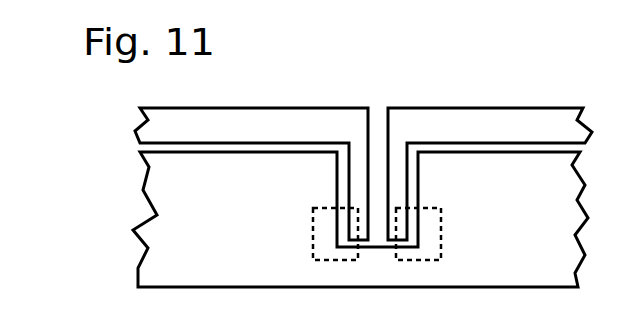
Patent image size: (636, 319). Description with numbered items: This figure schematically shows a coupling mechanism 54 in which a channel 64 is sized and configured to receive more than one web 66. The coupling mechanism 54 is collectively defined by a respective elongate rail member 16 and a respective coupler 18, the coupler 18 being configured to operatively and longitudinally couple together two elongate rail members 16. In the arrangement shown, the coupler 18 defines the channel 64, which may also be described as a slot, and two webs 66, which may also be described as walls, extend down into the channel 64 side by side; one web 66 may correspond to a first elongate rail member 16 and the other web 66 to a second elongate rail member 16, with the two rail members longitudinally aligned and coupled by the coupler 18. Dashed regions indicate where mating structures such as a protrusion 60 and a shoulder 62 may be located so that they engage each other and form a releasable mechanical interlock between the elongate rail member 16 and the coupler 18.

The coupling mechanism 54 is at (514, 60).
The elongate rail member 16 is at (219, 100).
The coupler 18 is at (311, 100).
The web 66 is at (370, 172).
The channel 64 is at (413, 162).
The protrusion 60 is at (313, 222).
The shoulder 62 is at (313, 252).